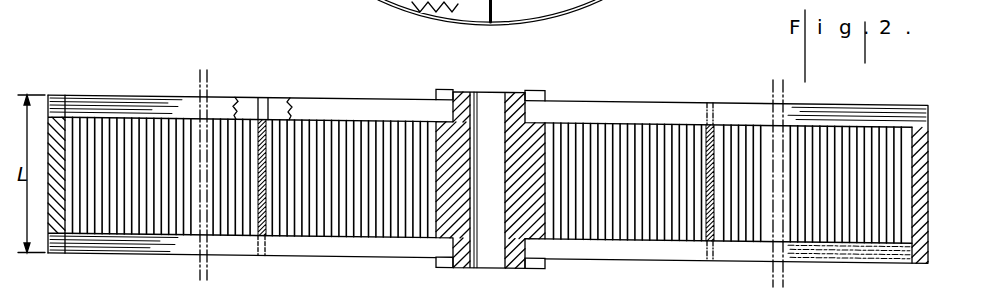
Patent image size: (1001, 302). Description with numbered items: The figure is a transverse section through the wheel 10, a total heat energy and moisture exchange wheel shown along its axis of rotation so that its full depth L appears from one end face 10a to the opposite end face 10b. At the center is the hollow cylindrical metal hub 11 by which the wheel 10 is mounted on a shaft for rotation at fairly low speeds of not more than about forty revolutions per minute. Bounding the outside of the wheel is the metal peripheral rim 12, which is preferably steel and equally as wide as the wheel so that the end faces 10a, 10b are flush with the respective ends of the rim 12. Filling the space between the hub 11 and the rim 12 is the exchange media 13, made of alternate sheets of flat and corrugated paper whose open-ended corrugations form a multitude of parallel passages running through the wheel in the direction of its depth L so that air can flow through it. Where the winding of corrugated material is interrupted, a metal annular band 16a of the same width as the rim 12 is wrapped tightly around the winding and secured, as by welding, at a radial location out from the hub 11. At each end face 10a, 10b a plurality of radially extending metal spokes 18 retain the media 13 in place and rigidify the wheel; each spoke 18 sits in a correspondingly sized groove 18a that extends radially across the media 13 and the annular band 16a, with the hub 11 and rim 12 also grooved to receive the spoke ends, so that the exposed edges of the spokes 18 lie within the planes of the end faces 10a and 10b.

The wheel 10 is at (679, 73).
The end face 10a is at (742, 263).
The end face 10b is at (756, 104).
The hub 11 is at (485, 100).
The peripheral rim 12 is at (921, 140).
The media 13 is at (375, 190).
The annular band 16a is at (260, 190).
The spoke 18 is at (340, 105).
The groove 18a is at (277, 107).